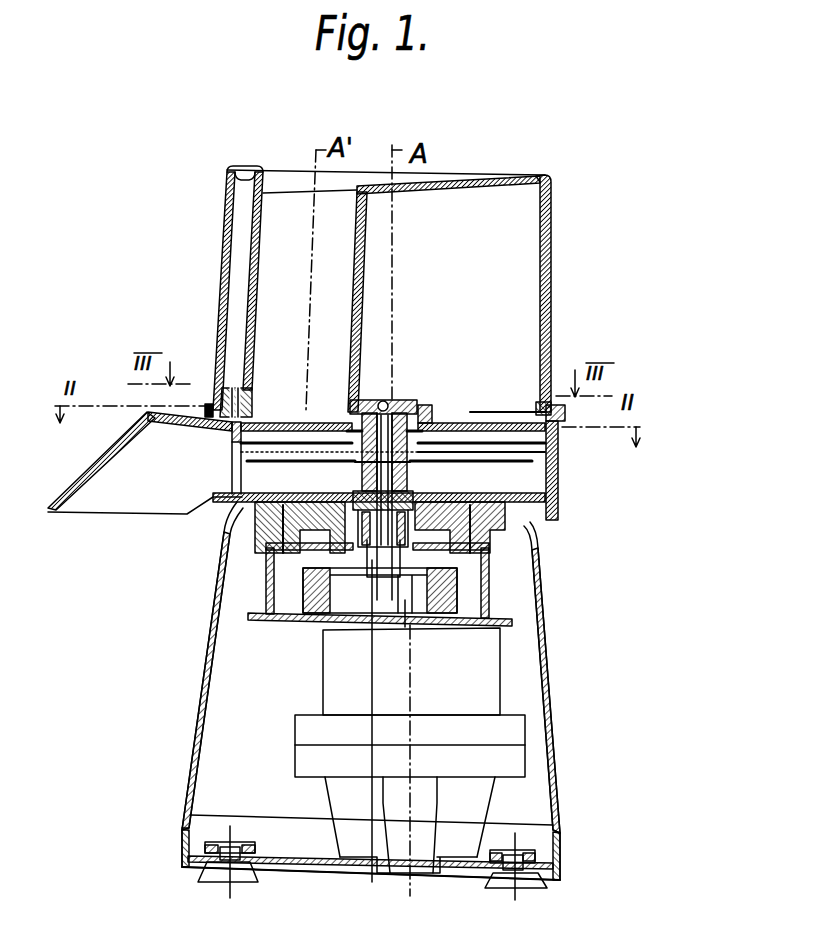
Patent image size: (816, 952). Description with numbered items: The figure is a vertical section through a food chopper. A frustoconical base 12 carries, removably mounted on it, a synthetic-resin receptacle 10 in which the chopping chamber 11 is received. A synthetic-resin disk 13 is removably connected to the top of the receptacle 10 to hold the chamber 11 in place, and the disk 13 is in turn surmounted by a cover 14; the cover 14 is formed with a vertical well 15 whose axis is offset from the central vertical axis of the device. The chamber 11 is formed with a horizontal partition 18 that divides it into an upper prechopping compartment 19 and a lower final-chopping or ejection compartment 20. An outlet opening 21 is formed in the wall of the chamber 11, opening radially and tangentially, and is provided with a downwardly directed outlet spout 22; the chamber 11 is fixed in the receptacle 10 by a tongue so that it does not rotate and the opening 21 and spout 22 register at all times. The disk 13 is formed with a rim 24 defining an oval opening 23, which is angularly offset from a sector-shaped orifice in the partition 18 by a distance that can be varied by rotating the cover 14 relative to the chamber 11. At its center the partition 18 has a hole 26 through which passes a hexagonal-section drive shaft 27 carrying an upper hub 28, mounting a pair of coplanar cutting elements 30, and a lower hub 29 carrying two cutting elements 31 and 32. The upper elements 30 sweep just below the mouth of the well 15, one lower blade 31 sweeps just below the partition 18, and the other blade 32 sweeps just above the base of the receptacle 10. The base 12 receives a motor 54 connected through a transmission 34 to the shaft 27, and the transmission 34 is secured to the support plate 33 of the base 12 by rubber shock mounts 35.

The receptacle 10 is at (558, 468).
The chopping chamber 11 is at (560, 500).
The frustoconical base 12 is at (547, 653).
The disk 13 is at (232, 386).
The cover 14 is at (548, 291).
The vertical well 15 is at (339, 289).
The horizontal partition 18 is at (551, 375).
The upper prechopping compartment 19 is at (482, 420).
The lower final-chopping or ejection compartment 20 is at (389, 477).
The outlet opening 21 is at (236, 460).
The outlet spout 22 is at (110, 492).
The oval opening 23 is at (304, 410).
The rim 24 is at (252, 400).
The hole 26 is at (422, 452).
The drive shaft 27 is at (358, 455).
The upper hub 28 is at (397, 397).
The lower hub 29 is at (405, 483).
The cutting elements 30 is at (432, 408).
The cutting element 31 is at (233, 475).
The cutting element 32 is at (547, 521).
The support plate 33 is at (497, 530).
The transmission 34 is at (287, 612).
The rubber shock mounts 35 is at (490, 540).
The motor 54 is at (368, 694).